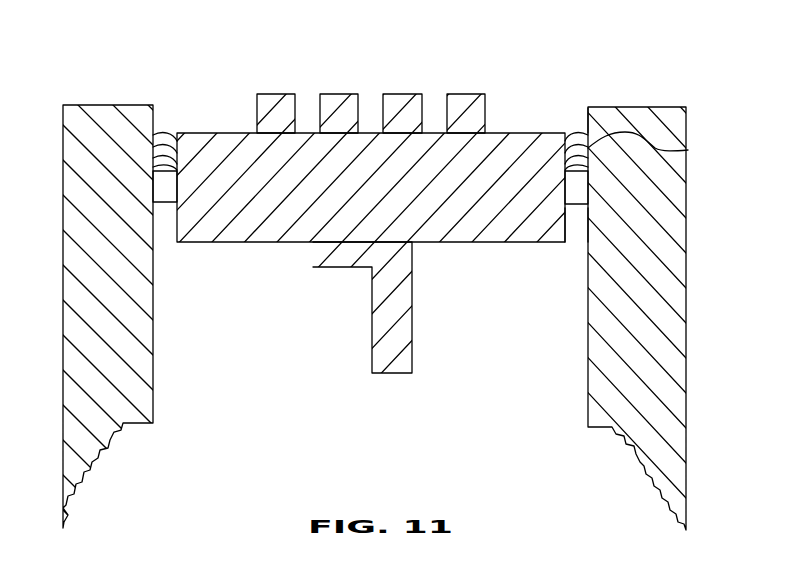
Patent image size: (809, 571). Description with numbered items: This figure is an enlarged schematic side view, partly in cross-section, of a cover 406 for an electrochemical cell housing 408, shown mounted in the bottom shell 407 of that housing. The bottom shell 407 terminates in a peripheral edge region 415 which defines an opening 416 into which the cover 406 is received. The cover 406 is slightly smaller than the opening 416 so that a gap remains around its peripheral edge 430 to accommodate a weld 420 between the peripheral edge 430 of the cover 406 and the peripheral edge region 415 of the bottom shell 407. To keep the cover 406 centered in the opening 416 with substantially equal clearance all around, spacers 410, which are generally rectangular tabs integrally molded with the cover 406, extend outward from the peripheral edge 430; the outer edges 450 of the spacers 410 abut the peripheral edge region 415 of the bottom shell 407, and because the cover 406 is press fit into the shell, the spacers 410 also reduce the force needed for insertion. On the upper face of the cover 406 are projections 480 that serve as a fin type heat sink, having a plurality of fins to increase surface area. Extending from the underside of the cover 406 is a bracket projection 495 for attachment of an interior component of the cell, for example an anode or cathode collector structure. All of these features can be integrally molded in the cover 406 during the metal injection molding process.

The electrochemical cell housing 408 is at (87, 91).
The bottom shell 407 is at (688, 406).
The cover 406 is at (521, 133).
The projections 480 is at (470, 94).
The bracket projection 495 is at (382, 373).
The spacers 410 is at (160, 203).
The weld 420 is at (166, 129).
The opening 416 is at (588, 129).
The peripheral edge region 415 is at (688, 150).
The peripheral edge 430 is at (567, 227).
The outer edges 450 is at (583, 210).